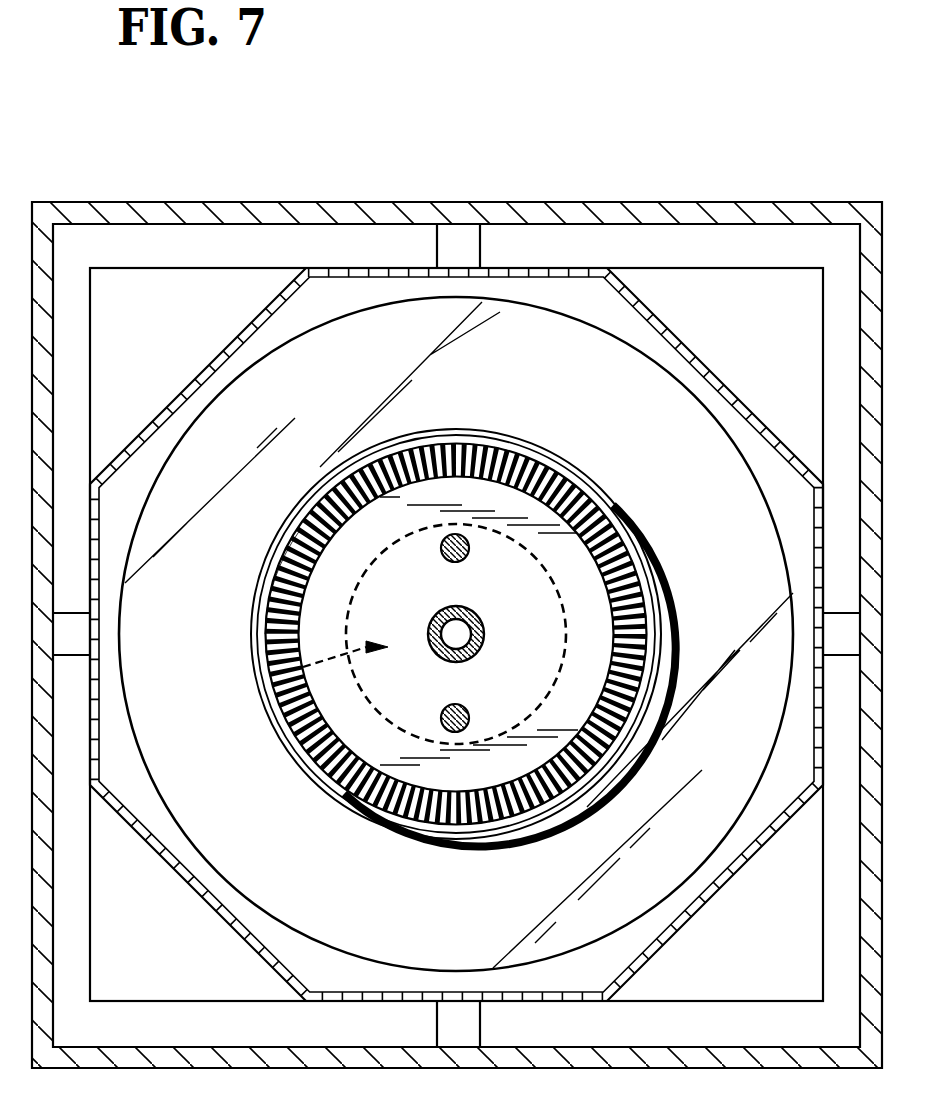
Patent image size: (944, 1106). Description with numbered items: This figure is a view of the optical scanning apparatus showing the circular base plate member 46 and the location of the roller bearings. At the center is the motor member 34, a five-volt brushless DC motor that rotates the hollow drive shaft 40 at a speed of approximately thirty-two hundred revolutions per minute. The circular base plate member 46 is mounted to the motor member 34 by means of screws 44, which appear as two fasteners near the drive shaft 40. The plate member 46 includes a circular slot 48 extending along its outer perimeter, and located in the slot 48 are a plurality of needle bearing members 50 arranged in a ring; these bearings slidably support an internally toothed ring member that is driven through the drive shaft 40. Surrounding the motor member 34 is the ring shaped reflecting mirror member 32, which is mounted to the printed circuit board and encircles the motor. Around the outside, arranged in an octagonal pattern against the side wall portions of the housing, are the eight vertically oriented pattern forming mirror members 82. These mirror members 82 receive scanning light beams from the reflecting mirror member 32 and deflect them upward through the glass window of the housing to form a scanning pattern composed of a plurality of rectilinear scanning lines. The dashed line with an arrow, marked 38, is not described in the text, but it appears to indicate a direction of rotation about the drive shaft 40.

The pattern forming mirror members 82 is at (212, 360).
The ring shaped reflecting mirror member 32 is at (660, 378).
The needle bearing members 50 is at (490, 455).
The circular base plate member 46 is at (256, 641).
The circular slot 48 is at (292, 566).
The motor member 34 is at (560, 590).
The screws 44 is at (470, 556).
The hollow drive shaft 40 is at (435, 617).
The direction of rotation arrow 38 is at (270, 685).